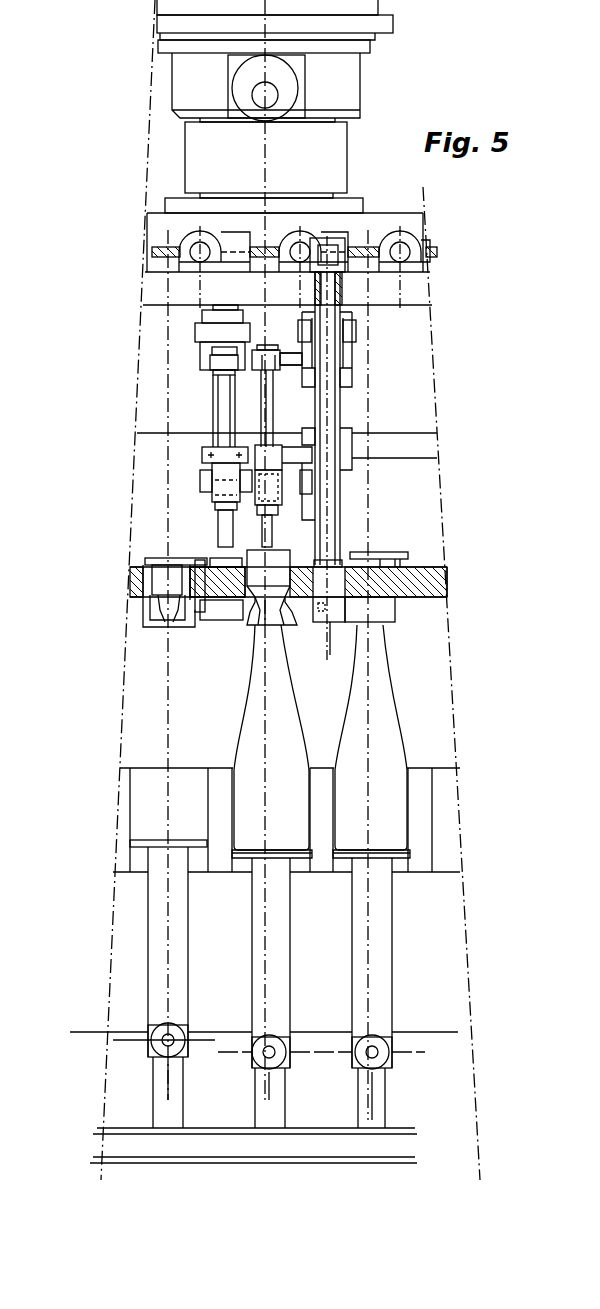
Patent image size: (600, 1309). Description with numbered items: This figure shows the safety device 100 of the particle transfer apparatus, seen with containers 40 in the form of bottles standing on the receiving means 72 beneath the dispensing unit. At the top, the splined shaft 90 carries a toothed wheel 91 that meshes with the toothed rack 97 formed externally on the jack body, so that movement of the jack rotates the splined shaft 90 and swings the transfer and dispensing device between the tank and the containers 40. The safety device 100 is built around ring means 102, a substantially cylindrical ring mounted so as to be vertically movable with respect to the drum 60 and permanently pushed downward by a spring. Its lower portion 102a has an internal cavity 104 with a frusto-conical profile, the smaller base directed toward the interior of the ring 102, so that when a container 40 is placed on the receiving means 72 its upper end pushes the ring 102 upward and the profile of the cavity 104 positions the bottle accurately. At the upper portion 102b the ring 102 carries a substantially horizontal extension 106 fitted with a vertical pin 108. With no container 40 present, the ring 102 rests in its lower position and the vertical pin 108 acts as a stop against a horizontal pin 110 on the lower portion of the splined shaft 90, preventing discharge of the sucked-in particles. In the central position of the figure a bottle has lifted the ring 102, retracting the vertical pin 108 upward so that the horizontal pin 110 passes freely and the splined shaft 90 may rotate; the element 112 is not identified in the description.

The container 40 is at (284, 742).
The drum 60 is at (217, 578).
The receiving means 72 is at (373, 965).
The splined shaft 90 is at (332, 462).
The toothed wheel 91 is at (325, 262).
The toothed rack 97 is at (402, 233).
The safety device 100 is at (302, 630).
The ring means 102 is at (147, 565).
The lower portion of the ring 102a is at (150, 622).
The upper portion of the ring 102b is at (177, 563).
The internal cavity 104 is at (162, 585).
The horizontal extension 106 is at (192, 567).
The vertical pin 108 is at (220, 608).
The horizontal pin 110 is at (192, 628).
The valve skirt 112 is at (187, 605).